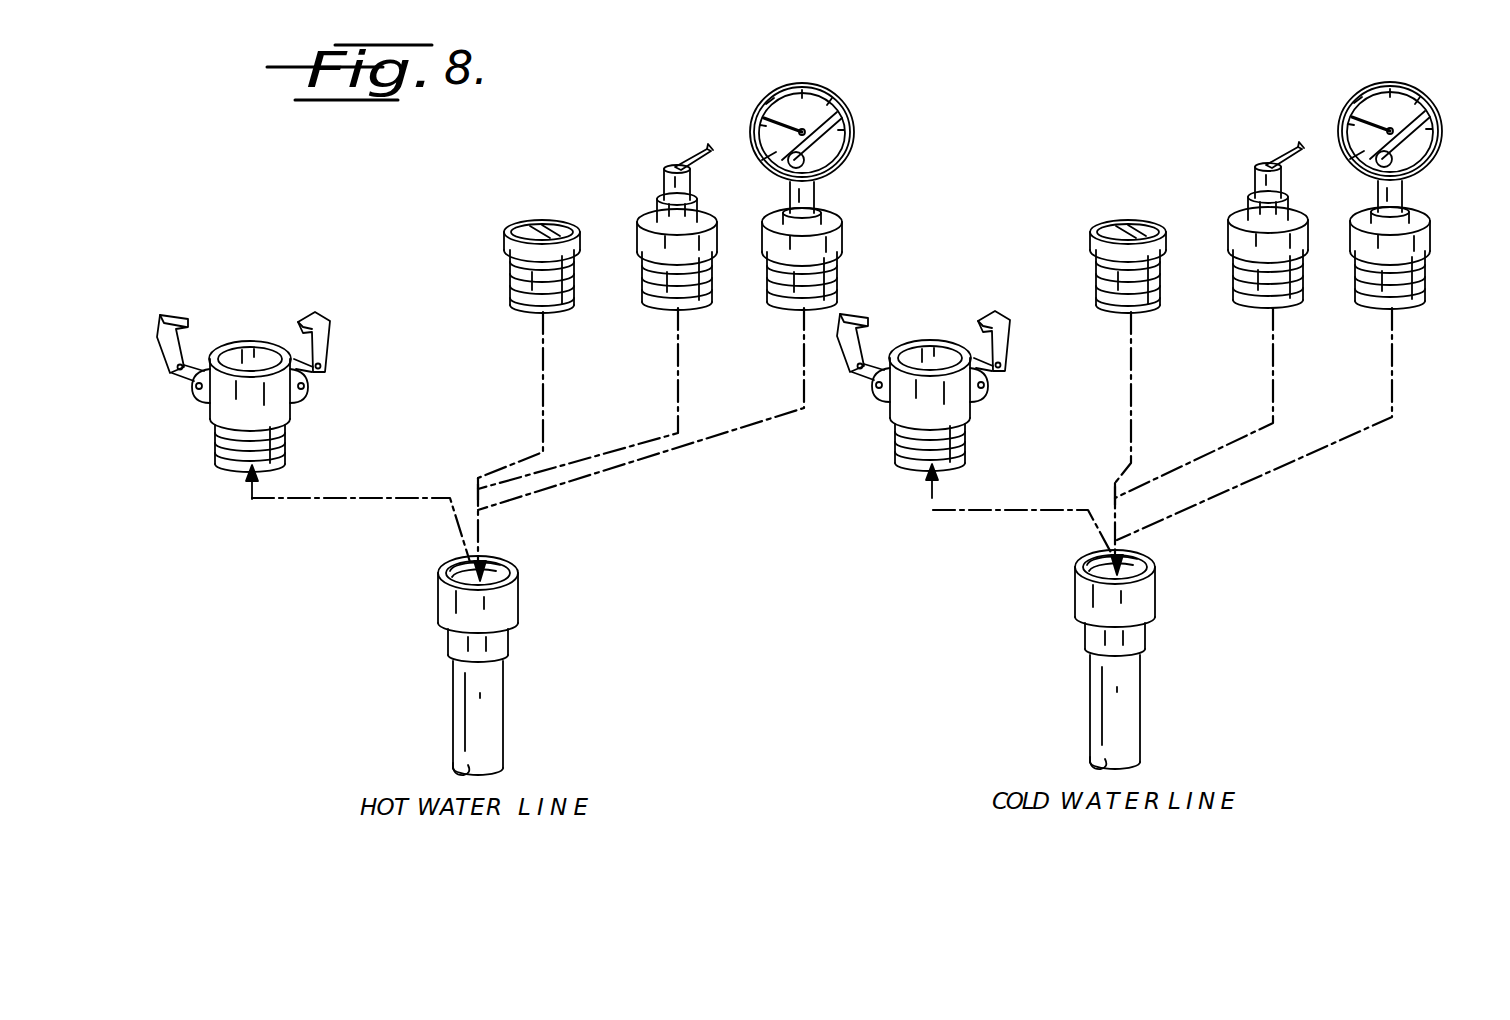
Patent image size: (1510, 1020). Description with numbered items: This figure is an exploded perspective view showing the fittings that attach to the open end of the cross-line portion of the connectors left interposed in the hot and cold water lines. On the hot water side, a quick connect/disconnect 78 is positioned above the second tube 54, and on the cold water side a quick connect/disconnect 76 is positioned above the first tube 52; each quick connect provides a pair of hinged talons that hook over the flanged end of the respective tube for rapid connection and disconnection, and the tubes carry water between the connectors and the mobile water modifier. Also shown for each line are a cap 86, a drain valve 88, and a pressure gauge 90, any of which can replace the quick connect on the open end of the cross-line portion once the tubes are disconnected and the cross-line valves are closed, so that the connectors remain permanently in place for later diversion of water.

The quick connect/disconnect 78 is at (283, 415).
The quick connect/disconnect 76 is at (963, 443).
The cap 86 is at (533, 227).
The drain valve 88 is at (697, 305).
The pressure gauge 90 is at (840, 233).
The second tube 54 is at (507, 722).
The first tube 52 is at (1137, 712).